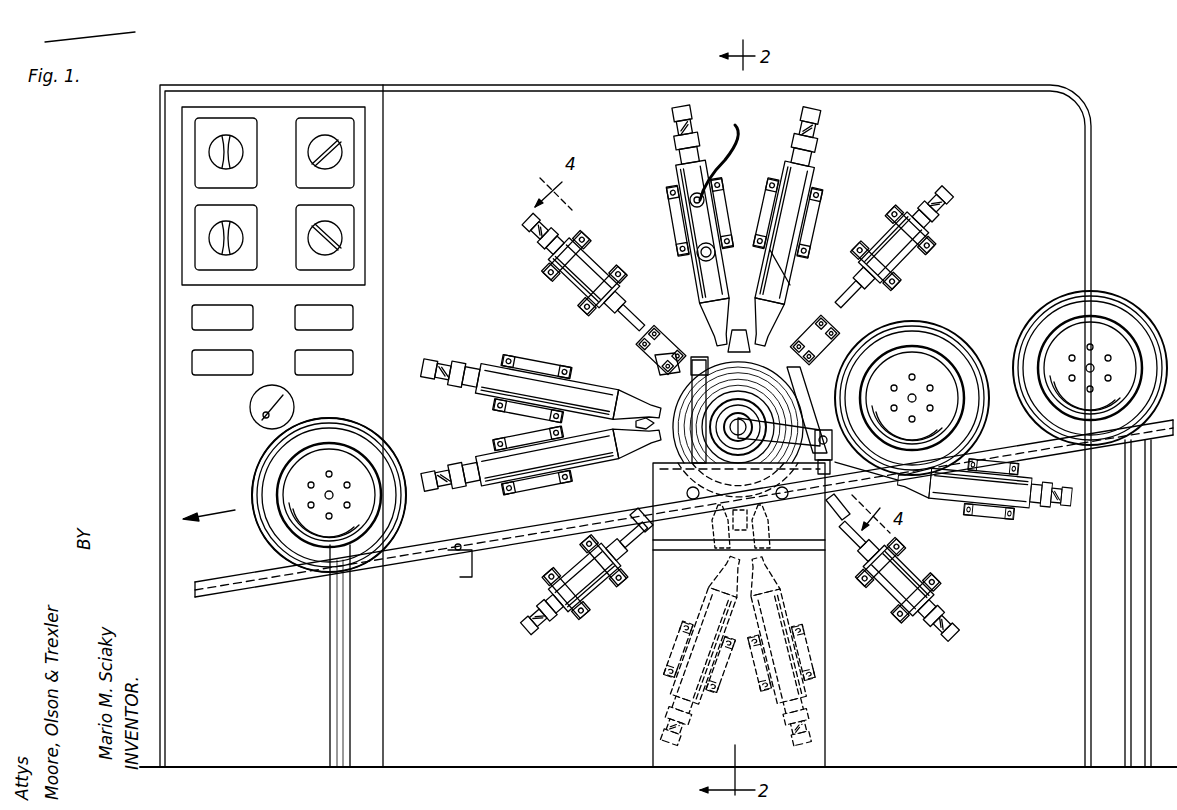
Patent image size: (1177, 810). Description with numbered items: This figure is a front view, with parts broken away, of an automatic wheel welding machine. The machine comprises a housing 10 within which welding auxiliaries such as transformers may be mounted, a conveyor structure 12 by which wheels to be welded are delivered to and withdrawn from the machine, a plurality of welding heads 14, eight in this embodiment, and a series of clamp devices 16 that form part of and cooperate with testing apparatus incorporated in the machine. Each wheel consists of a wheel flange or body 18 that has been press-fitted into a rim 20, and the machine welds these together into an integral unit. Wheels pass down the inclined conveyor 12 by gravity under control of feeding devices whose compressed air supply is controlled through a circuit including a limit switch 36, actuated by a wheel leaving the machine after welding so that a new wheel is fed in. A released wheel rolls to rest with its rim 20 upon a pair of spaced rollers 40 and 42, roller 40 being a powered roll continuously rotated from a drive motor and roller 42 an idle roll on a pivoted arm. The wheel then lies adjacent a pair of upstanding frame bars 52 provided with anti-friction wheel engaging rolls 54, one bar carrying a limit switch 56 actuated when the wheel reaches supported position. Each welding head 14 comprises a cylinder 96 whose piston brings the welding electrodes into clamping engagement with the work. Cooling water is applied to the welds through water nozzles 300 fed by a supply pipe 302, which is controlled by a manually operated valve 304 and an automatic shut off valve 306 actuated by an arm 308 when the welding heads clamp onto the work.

The housing 10 is at (458, 98).
The conveyor structure 12 is at (291, 575).
The welding heads 14 is at (755, 205).
The clamp devices 16 is at (630, 345).
The wheel flange or body 18 is at (292, 484).
The rim 20 is at (262, 462).
The limit switch 36 is at (461, 570).
The roller 40 is at (653, 480).
The roller 42 is at (782, 500).
The upstanding frame bars 52 is at (738, 429).
The anti-friction wheel engaging rolls 54 is at (645, 358).
The limit switch 56 is at (700, 355).
The cylinder 96 is at (690, 250).
The water nozzles 300 is at (755, 345).
The supply pipe 302 is at (733, 125).
The manually operated valve 304 is at (690, 200).
The automatic shut off valve 306 is at (698, 260).
The arm 308 is at (790, 280).